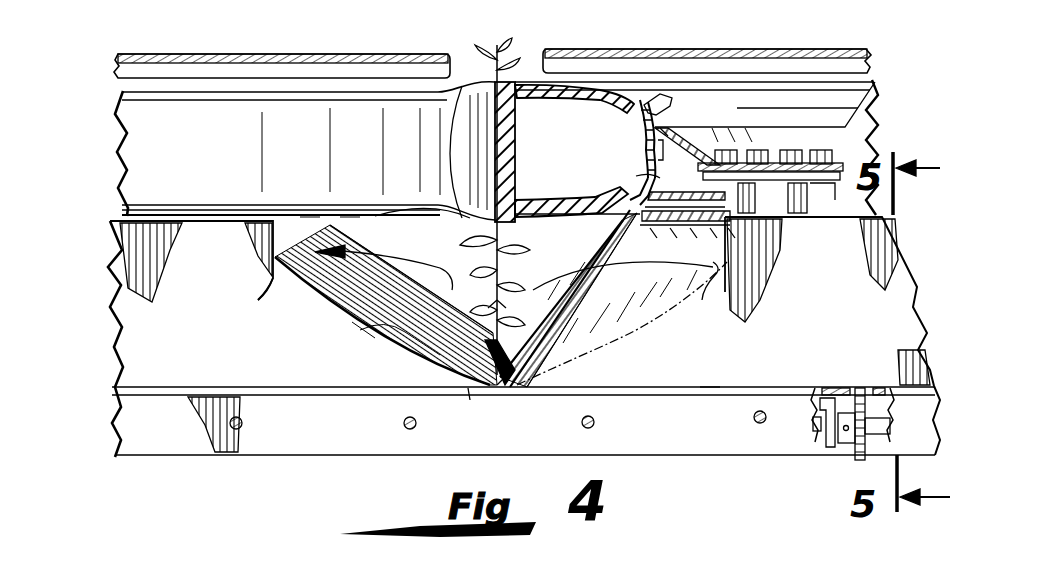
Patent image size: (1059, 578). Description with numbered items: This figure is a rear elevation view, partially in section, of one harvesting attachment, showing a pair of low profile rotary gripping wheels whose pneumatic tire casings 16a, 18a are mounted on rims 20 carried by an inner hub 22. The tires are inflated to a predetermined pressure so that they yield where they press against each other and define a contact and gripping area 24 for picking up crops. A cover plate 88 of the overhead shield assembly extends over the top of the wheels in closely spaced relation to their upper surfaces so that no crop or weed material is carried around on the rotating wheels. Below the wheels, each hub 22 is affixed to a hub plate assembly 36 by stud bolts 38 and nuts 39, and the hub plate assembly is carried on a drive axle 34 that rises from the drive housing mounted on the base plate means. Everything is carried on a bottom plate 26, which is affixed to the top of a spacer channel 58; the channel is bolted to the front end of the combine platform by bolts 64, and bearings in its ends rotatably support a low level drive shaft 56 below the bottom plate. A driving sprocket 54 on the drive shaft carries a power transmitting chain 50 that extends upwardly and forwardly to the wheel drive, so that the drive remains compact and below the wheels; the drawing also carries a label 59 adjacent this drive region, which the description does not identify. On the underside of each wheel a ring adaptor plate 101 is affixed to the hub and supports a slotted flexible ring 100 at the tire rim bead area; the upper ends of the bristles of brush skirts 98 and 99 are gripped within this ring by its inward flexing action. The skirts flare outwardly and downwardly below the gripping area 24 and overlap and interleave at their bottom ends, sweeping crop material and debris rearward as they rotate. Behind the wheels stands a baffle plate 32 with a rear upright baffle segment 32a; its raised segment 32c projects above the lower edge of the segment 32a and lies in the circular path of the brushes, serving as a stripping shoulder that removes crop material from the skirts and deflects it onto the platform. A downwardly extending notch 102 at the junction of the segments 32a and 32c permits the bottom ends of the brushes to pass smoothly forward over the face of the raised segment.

The cover plate 88 is at (213, 54).
The tire casing 18a is at (496, 80).
The tire casing 16a is at (524, 82).
The gripping area 24 is at (495, 150).
The rim 20 is at (646, 149).
The ring adaptor plate 101 is at (638, 176).
The inner hub 22 is at (698, 140).
The nuts 39 is at (812, 152).
The baffle plate 32 is at (110, 243).
The raised segment 32c is at (273, 239).
The flexible ring 100 is at (375, 217).
The stud bolts 38 is at (795, 190).
The drive axle 34 is at (800, 218).
The hub plate assembly 36 is at (837, 192).
The notch 102 is at (283, 267).
The brush skirt 99 is at (360, 325).
The rear upright baffle segment 32a is at (501, 298).
The brush skirt 98 is at (505, 390).
The bottom plate 26 is at (690, 387).
The bolts 64 is at (243, 424).
The spacer channel 58 is at (185, 458).
The hatched pad 59 is at (852, 387).
The chain 50 is at (880, 402).
The driving sprocket 54 is at (840, 446).
The drive shaft 56 is at (876, 448).